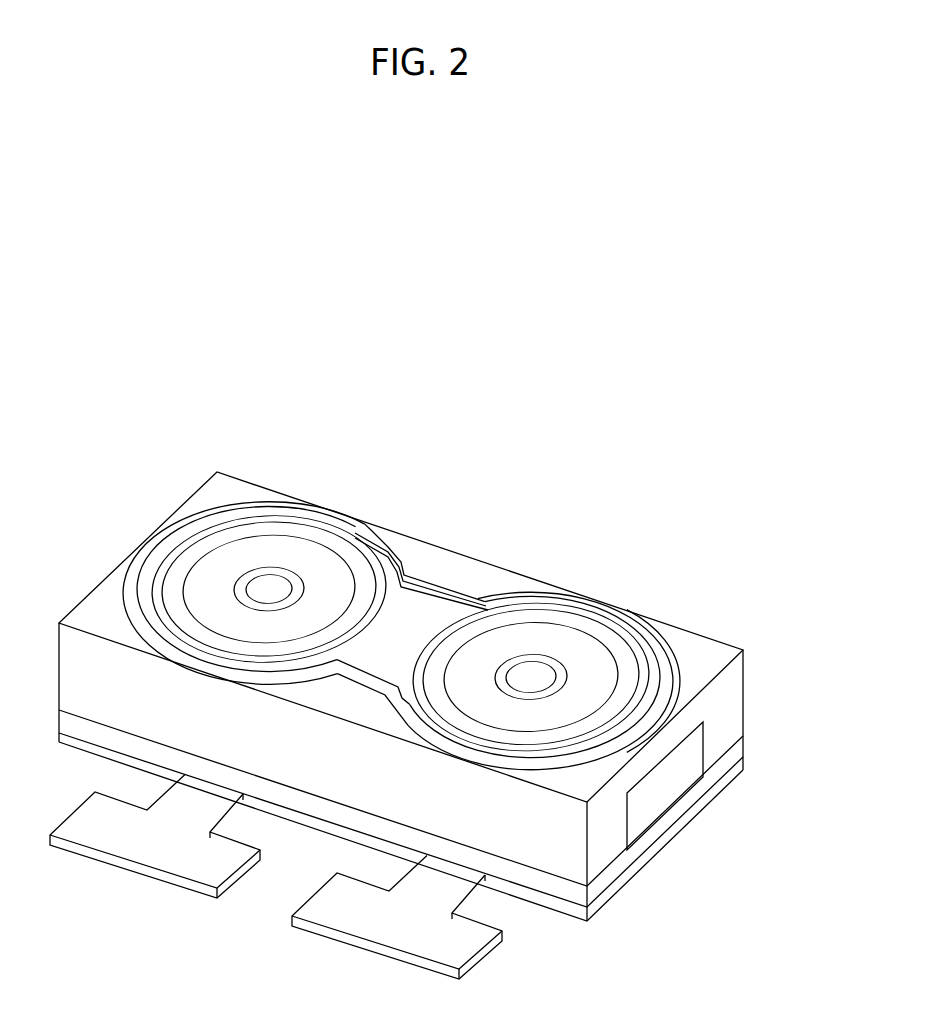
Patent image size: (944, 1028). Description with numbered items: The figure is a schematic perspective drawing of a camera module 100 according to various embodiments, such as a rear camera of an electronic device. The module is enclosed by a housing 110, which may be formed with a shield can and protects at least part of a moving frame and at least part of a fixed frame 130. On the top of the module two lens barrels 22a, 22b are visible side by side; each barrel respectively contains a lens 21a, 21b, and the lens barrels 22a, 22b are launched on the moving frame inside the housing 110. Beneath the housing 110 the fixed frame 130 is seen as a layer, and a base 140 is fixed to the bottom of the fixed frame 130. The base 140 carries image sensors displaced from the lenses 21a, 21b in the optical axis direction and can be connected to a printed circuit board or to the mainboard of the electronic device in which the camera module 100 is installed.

The camera module 100 is at (636, 452).
The housing 110 is at (725, 712).
The fixed frame 130 is at (725, 767).
The base 140 is at (466, 942).
The lens 21a is at (274, 590).
The lens barrel 22a is at (279, 534).
The lens 21b is at (534, 676).
The lens barrel 22b is at (538, 623).